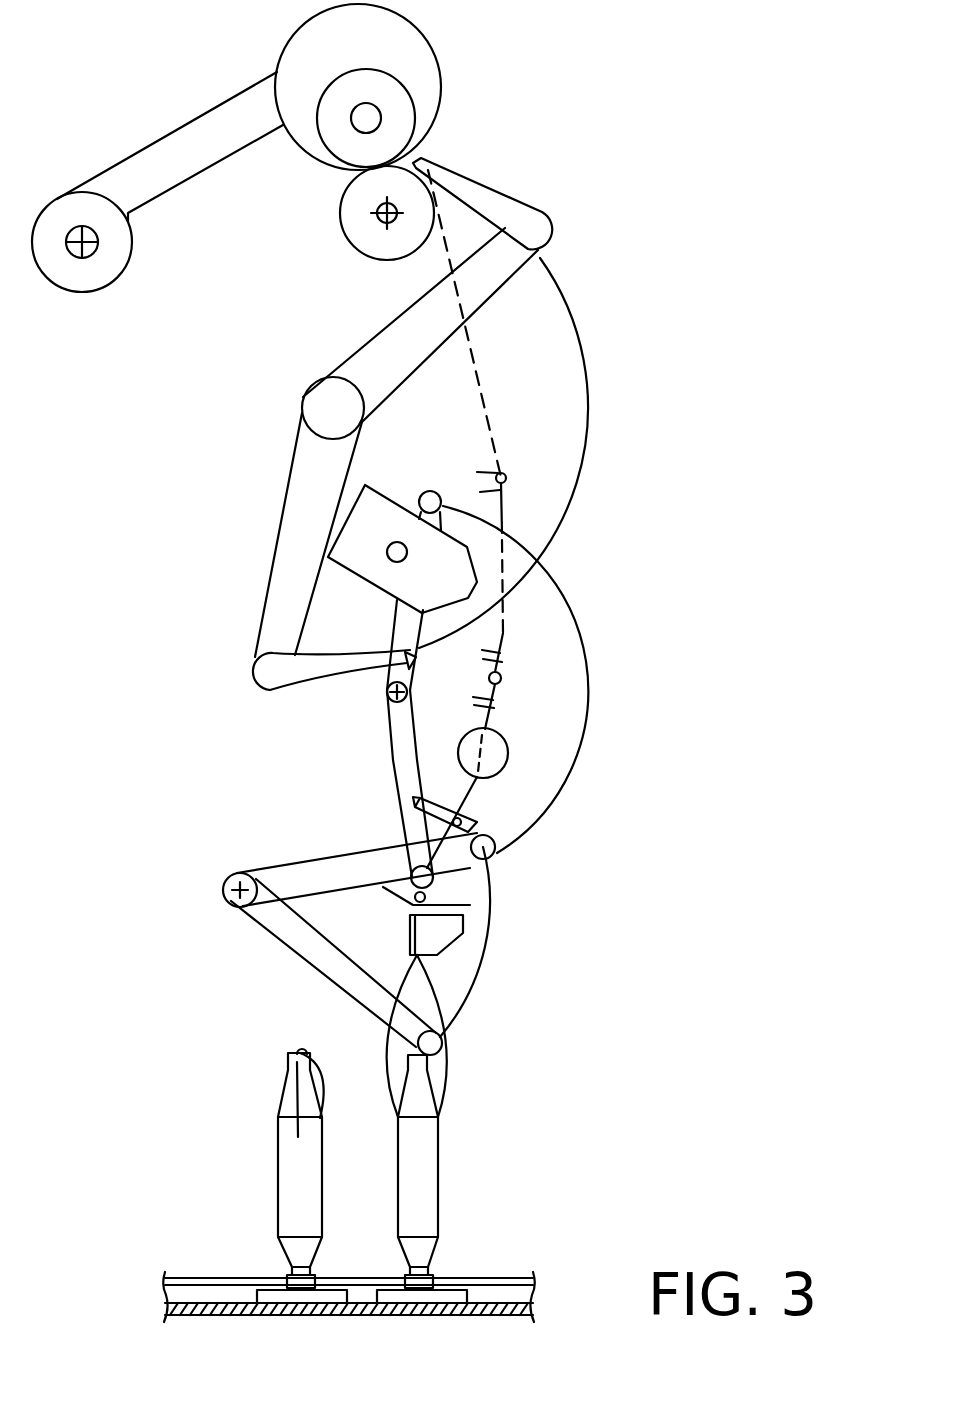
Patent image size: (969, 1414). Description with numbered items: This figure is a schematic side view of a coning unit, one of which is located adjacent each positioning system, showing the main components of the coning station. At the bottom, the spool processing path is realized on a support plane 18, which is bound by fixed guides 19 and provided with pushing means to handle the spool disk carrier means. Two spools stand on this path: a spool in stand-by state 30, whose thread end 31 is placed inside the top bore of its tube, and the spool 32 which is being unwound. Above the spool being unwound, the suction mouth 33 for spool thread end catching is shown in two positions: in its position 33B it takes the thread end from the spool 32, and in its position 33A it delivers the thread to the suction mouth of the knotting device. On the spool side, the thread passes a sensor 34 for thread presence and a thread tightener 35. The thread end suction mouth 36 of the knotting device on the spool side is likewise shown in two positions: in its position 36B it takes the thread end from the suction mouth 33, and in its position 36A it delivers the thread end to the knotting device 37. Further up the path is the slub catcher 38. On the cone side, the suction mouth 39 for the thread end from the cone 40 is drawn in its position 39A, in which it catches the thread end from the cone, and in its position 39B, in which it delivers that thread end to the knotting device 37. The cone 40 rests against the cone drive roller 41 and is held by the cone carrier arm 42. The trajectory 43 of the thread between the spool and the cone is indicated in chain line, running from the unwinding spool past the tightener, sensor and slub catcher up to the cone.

The support plane 18 is at (540, 1307).
The fixed guides 19 is at (165, 1278).
The spool in stand-by state 30 is at (254, 1259).
The thread end 31 is at (283, 1100).
The spool being unwound 32 is at (466, 1257).
The suction mouth for spool thread end catching 33 is at (497, 855).
The delivering position of suction mouth 33A is at (280, 880).
The taking position of suction mouth 33B is at (270, 922).
The sensor for thread presence 34 is at (477, 823).
The thread tightener 35 is at (497, 754).
The thread end suction mouth of the knotting device 36 is at (432, 491).
The delivering position of knotting device suction mouth 36A is at (410, 630).
The taking position of knotting device suction mouth 36B is at (393, 762).
The knotting device 37 is at (457, 553).
The slub catcher 38 is at (506, 480).
The suction mouth for the thread end from the cone 39 is at (413, 163).
The catching position of cone suction mouth 39A is at (500, 200).
The delivering position of cone suction mouth 39B is at (270, 672).
The cone 40 is at (413, 57).
The cone drive roller 41 is at (363, 235).
The cone carrier arm 42 is at (128, 167).
The trajectory of the thread 43 is at (475, 367).